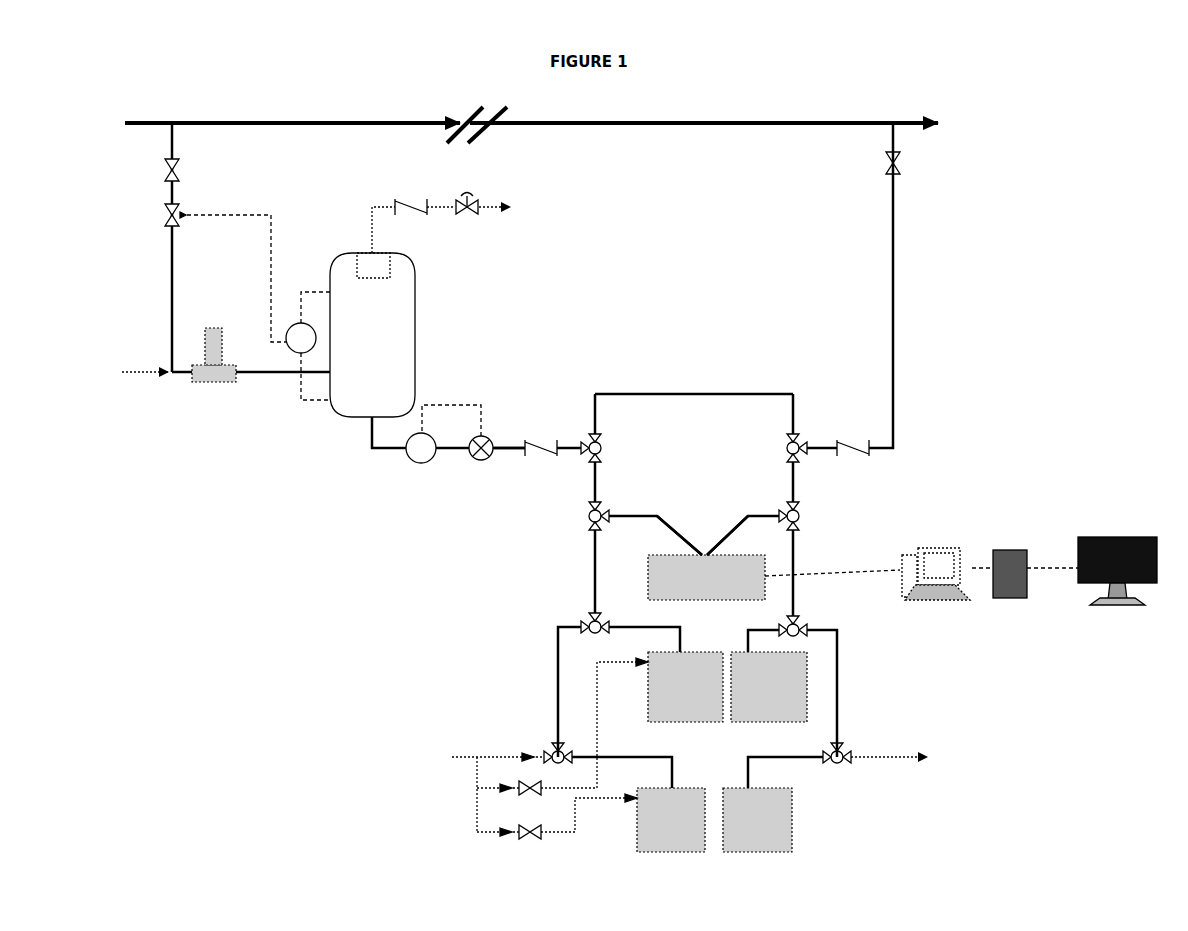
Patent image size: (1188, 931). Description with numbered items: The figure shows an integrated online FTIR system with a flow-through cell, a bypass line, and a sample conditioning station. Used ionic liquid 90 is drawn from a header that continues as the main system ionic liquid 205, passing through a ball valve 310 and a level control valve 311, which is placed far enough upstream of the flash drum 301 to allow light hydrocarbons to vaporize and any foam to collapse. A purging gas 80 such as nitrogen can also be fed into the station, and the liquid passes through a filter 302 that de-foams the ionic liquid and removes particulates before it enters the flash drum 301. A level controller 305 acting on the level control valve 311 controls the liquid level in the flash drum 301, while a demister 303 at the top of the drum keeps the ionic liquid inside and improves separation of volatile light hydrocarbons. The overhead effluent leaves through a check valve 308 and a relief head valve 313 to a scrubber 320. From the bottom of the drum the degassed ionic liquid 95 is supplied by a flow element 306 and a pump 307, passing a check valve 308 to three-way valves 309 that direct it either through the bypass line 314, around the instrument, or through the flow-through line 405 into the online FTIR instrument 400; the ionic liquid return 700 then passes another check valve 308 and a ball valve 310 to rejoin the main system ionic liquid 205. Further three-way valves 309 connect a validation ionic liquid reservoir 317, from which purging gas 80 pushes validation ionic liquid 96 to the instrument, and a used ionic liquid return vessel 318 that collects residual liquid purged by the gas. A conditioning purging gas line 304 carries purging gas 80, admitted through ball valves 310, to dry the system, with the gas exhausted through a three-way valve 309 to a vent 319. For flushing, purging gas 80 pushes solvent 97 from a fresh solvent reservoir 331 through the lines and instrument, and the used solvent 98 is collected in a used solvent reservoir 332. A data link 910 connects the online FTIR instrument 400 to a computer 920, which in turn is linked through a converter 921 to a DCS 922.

The used ionic liquid 90 is at (316, 117).
The main system ionic liquid 205 is at (704, 107).
The ball valve 310 is at (509, 509).
The level control valve 311 is at (202, 273).
The purging gas 80 is at (334, 569).
The filter 302 is at (213, 369).
The level controller 305 is at (288, 323).
The flash drum 301 is at (372, 335).
The demister 303 is at (386, 270).
The check valve 308 is at (852, 446).
The relief head valve 313 is at (465, 190).
The scrubber 320 is at (518, 207).
The flow element 306 is at (417, 463).
The pump 307 is at (480, 462).
The degassed ionic liquid 95 is at (500, 446).
The bypass line 314 is at (694, 409).
The ionic liquid return 700 is at (907, 285).
The three-way valve 309 is at (551, 748).
The online FTIR instrument 400 is at (694, 558).
The flow-through line 405 is at (735, 522).
The conditioning purging gas line 304 is at (544, 692).
The validation ionic liquid 96 is at (644, 629).
The validation ionic liquid reservoir 317 is at (685, 687).
The used ionic liquid return vessel 318 is at (769, 676).
The solvent 97 is at (622, 763).
The used solvent 98 is at (783, 763).
The vent 319 is at (913, 758).
The fresh solvent reservoir 331 is at (671, 820).
The used solvent reservoir 332 is at (757, 820).
The data link 910 is at (921, 557).
The computer 920 is at (939, 593).
The converter 921 is at (1030, 594).
The DCS 922 is at (1117, 587).